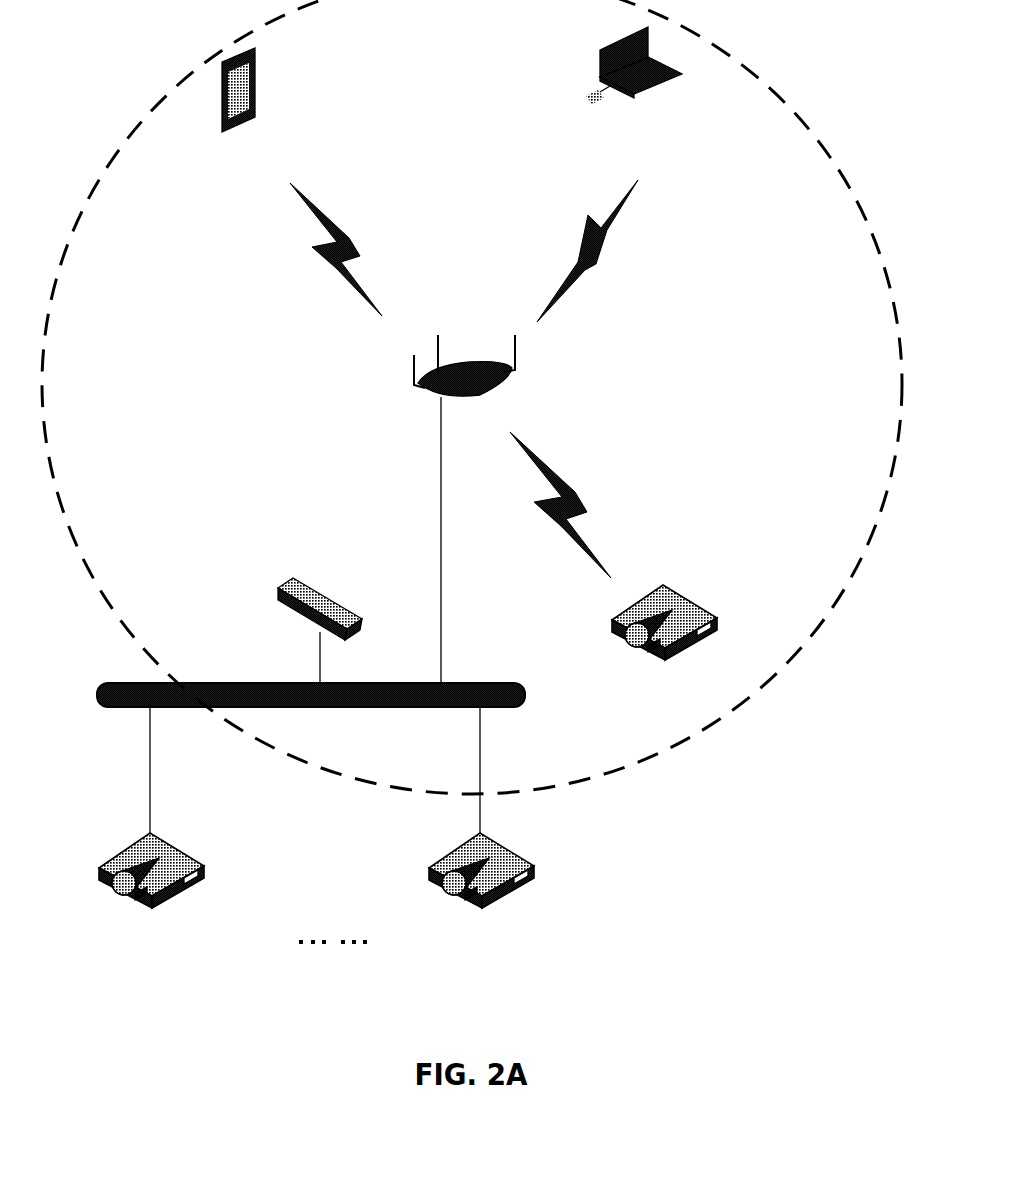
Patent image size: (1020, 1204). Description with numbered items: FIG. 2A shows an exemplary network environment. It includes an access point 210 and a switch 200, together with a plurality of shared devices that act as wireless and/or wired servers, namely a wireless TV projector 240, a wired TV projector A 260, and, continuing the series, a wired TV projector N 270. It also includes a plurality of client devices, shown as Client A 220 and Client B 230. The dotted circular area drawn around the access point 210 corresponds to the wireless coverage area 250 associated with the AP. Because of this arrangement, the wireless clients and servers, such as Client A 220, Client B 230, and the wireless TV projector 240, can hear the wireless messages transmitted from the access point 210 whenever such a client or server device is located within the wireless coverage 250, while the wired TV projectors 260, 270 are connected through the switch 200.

The switch 200 is at (357, 605).
The access point 210 is at (480, 443).
The Client A 220 is at (283, 173).
The Client B 230 is at (683, 139).
The wireless TV projector 240 is at (645, 726).
The wireless coverage area 250 is at (810, 451).
The wired TV projector A 260 is at (157, 985).
The wired TV projector N 270 is at (490, 985).